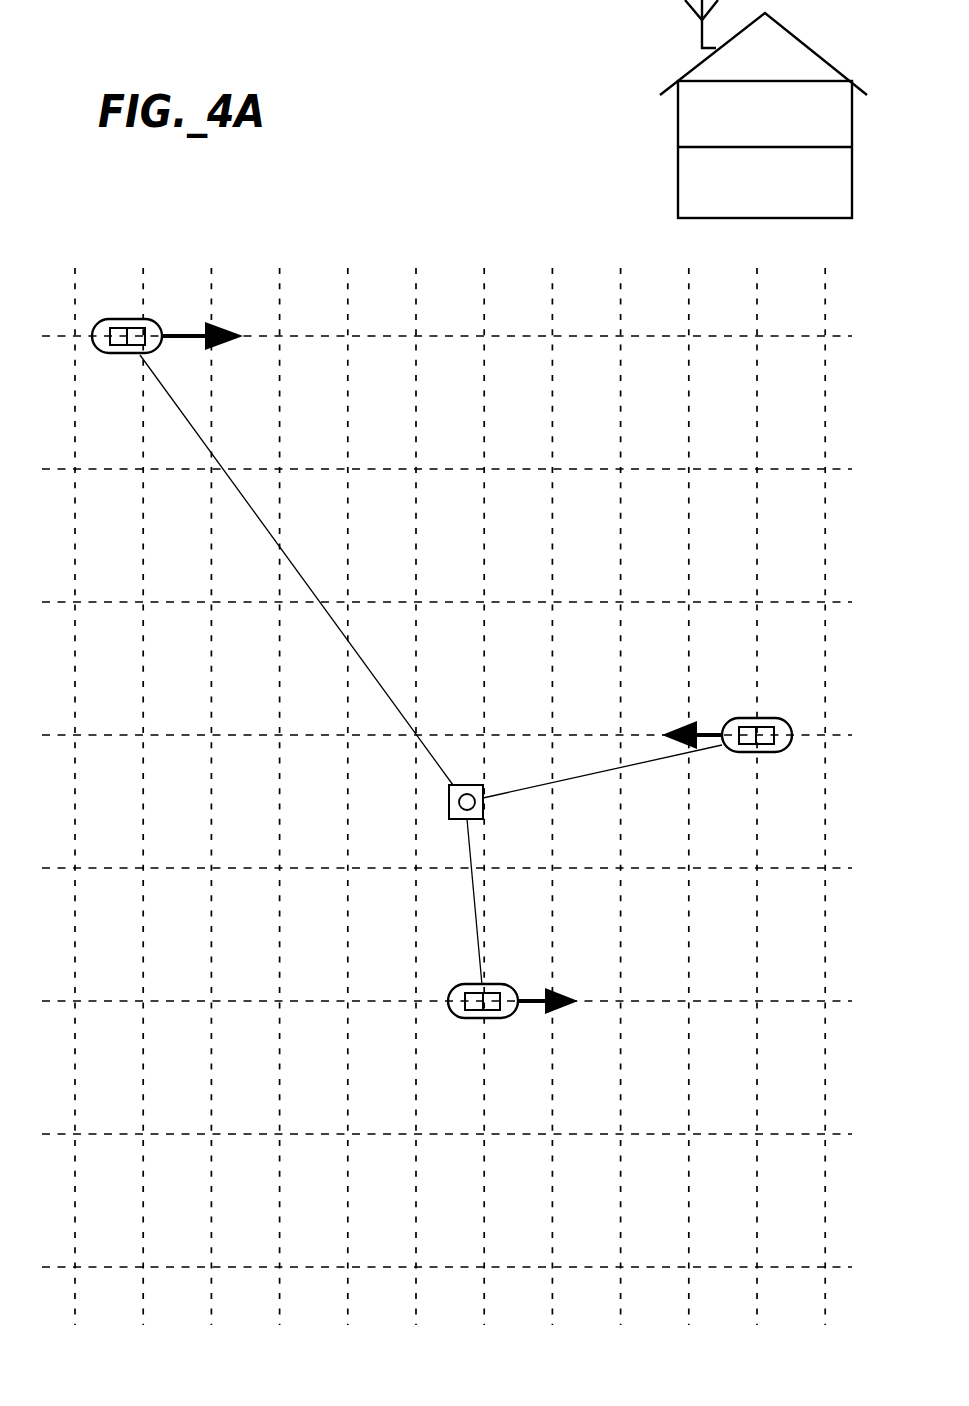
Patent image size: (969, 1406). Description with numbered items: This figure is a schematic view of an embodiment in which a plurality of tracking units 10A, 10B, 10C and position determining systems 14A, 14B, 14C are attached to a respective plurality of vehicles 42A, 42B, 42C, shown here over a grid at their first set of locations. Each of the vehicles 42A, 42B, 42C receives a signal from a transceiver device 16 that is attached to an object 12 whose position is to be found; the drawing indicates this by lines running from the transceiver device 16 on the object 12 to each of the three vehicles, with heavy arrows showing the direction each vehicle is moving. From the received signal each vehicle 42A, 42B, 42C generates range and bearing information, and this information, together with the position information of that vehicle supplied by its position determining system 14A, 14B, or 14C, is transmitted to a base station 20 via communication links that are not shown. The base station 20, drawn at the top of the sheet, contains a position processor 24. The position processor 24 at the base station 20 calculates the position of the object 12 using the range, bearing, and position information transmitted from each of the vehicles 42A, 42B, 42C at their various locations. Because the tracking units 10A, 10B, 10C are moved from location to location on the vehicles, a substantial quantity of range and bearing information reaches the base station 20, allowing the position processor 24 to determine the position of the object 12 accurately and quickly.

The tracking unit 10A is at (500, 992).
The tracking unit 10B is at (742, 736).
The tracking unit 10C is at (160, 338).
The position determining system 14A is at (490, 992).
The position determining system 14B is at (783, 695).
The position determining system 14C is at (135, 333).
The vehicle 42A is at (480, 1019).
The vehicle 42B is at (752, 754).
The vehicle 42C is at (140, 354).
The object 12 is at (475, 802).
The transceiver device 16 is at (484, 787).
The base station 20 is at (734, 109).
The position processor 24 is at (678, 200).